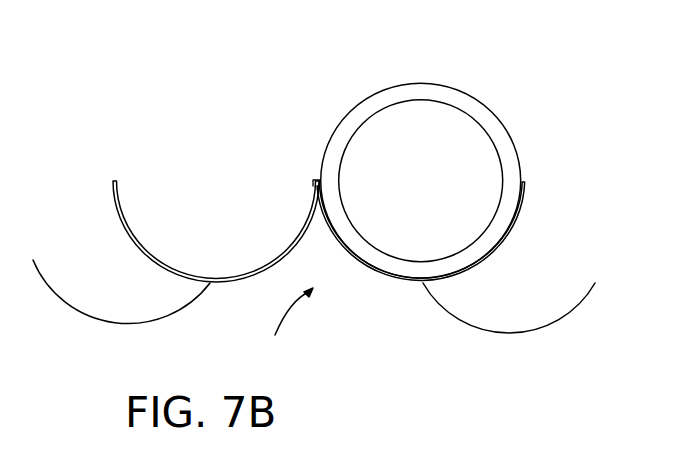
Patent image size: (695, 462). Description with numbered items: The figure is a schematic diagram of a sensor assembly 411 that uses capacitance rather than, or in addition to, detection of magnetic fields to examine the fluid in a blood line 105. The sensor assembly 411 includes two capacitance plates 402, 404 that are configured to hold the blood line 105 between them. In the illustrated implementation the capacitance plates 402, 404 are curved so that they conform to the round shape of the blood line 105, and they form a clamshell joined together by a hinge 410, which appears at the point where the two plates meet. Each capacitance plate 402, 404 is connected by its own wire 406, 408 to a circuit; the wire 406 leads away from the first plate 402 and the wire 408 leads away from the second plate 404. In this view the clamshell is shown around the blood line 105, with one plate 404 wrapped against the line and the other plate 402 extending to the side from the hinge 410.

The blood line 105 is at (428, 82).
The capacitance plate 402 is at (110, 190).
The capacitance plate 404 is at (525, 190).
The wire 406 is at (103, 325).
The wire 408 is at (517, 333).
The hinge 410 is at (315, 178).
The sensor assembly 411 is at (280, 326).